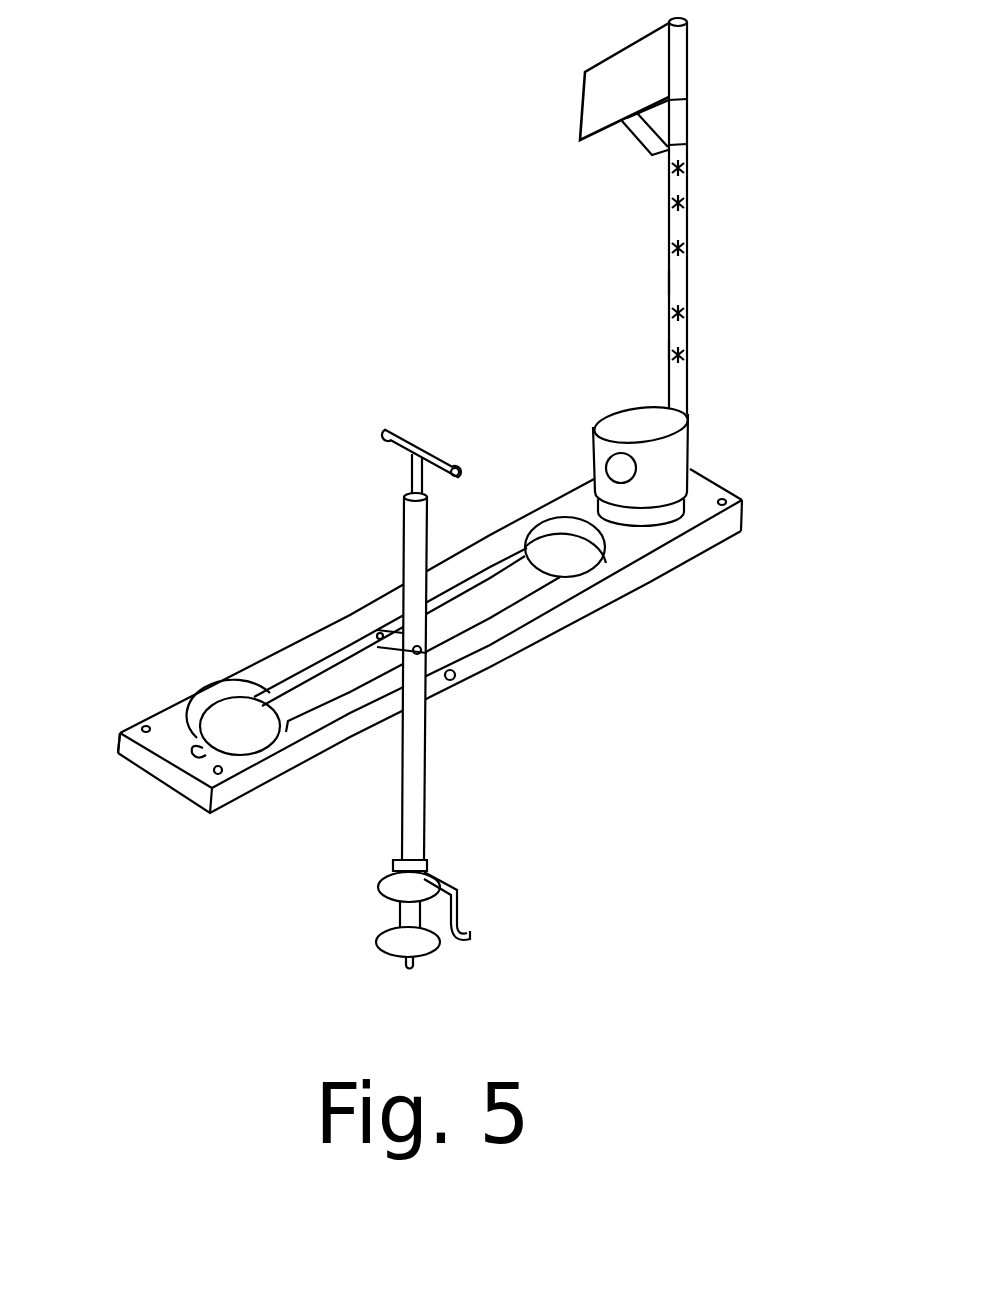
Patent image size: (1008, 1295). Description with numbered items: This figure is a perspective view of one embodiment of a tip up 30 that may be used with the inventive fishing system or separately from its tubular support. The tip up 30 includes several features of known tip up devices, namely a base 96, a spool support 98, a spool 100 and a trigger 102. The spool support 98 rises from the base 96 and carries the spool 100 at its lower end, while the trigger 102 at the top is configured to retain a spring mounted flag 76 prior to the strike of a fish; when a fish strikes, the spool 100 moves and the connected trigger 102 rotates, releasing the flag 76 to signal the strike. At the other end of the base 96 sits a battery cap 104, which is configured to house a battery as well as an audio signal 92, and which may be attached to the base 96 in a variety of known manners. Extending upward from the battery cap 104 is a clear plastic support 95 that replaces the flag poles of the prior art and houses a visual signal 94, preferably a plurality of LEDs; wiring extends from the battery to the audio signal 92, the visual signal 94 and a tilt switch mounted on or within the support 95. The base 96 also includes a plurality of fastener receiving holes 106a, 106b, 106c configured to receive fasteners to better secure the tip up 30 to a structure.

The tip up 30 is at (271, 566).
The spring mounted flag 76 is at (694, 238).
The audio signal 92 is at (628, 471).
The visual signal 94 is at (687, 348).
The clear plastic support 95 is at (687, 282).
The base 96 is at (545, 611).
The spool support 98 is at (425, 790).
The spool 100 is at (423, 947).
The trigger 102 is at (428, 452).
The battery cap 104 is at (693, 443).
The fastener receiving hole 106a is at (219, 775).
The fastener receiving hole 106b is at (118, 753).
The fastener receiving hole 106c is at (726, 504).